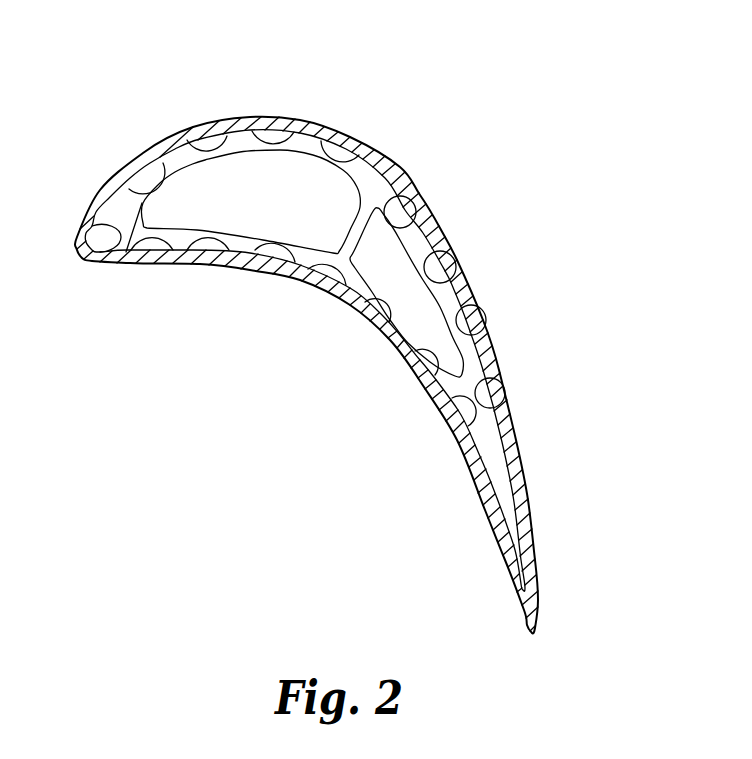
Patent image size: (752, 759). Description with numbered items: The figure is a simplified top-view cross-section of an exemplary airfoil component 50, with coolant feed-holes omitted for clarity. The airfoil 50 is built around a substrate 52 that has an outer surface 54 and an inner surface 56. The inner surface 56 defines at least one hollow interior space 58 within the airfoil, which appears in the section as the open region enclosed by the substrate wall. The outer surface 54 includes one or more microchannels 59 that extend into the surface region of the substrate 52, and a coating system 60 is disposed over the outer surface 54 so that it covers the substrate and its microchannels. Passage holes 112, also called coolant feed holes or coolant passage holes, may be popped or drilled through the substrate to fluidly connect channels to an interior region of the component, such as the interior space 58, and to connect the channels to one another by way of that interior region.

The airfoil component 50 is at (435, 175).
The substrate 52 is at (370, 197).
The outer surface 54 is at (252, 118).
The inner surface 56 is at (122, 260).
The interior space 58 is at (297, 190).
The microchannels 59 is at (140, 187).
The coating system 60 is at (315, 285).
The passage holes 112 is at (440, 247).